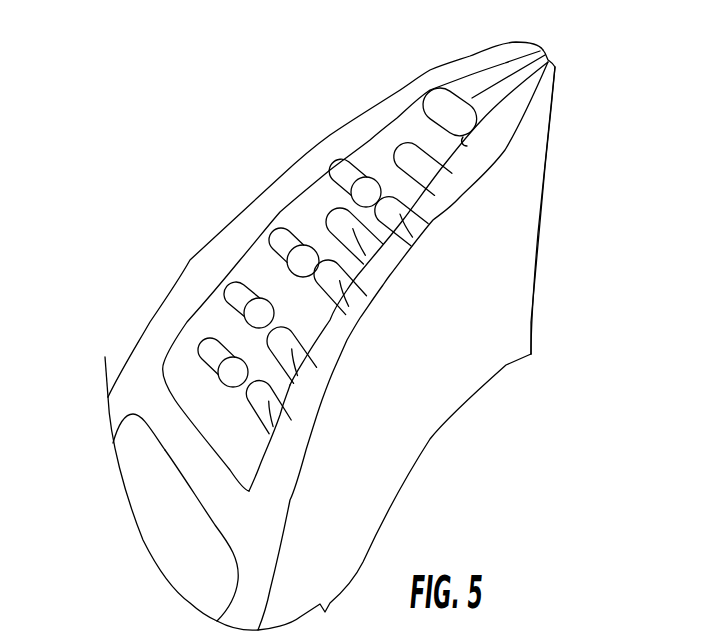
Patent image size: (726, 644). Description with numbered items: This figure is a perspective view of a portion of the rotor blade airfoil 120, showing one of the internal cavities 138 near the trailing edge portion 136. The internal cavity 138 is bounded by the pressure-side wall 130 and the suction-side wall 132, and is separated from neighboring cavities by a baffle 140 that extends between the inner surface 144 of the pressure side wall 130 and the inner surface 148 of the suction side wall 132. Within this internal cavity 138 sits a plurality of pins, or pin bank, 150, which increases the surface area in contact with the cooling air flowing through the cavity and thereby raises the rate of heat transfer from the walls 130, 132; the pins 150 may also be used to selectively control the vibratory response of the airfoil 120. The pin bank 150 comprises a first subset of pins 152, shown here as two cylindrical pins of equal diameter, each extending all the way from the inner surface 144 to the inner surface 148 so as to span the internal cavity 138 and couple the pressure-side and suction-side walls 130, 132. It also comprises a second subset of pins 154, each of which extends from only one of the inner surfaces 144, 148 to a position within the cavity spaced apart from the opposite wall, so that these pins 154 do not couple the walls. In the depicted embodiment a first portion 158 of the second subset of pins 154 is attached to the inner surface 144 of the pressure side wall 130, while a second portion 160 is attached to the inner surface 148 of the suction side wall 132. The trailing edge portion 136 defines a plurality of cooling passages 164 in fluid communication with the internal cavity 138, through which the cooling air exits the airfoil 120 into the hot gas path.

The airfoil 120 is at (170, 104).
The pressure-side wall 130 is at (397, 257).
The suction-side wall 132 is at (225, 240).
The trailing edge portion 136 is at (545, 185).
The internal cavity 138 is at (221, 420).
The baffle 140 is at (172, 437).
The inner surface of the pressure side wall 144 is at (463, 137).
The inner surface of the suction side wall 148 is at (263, 243).
The plurality of pins 150 is at (390, 136).
The first subset of pins 152 is at (416, 160).
The second subset of pins 154 is at (347, 171).
The first portion of the second subset of pins 158 is at (255, 440).
The second portion of the second subset of pins 160 is at (182, 382).
The cooling passages 164 is at (513, 76).